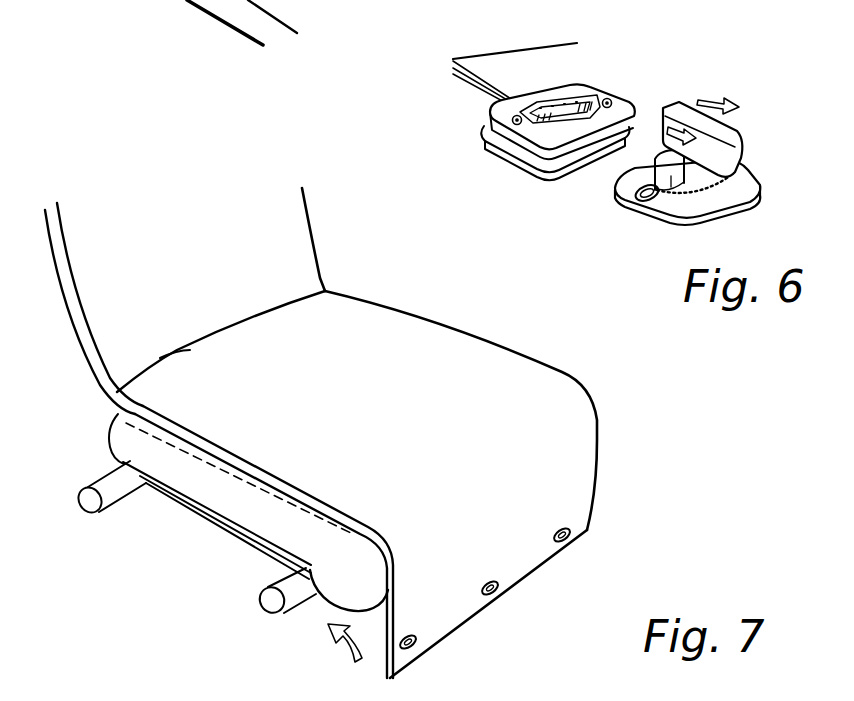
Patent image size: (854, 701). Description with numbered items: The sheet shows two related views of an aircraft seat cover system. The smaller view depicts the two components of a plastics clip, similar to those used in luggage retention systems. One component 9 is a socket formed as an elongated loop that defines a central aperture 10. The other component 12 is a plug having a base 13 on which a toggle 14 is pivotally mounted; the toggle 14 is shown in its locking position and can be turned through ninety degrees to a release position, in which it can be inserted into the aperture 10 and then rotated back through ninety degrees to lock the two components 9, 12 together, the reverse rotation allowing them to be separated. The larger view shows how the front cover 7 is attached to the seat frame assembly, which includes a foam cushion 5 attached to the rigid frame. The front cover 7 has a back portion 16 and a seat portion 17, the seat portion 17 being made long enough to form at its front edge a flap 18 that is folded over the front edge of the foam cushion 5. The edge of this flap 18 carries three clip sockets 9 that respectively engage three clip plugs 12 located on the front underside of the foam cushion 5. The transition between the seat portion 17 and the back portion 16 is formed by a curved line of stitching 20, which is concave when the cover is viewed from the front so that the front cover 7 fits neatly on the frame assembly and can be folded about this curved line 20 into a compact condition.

In FIG. 7, the foam cushion 5 is at (250, 503).
In FIG. 7, the front cover 7 is at (490, 371).
In FIG. 6, the clip socket component 9 is at (490, 173).
In FIG. 7, the clip socket component 9 is at (413, 637).
In FIG. 6, the central aperture 10 is at (543, 157).
In FIG. 6, the clip plug component 12 is at (759, 200).
In FIG. 6, the base 13 is at (670, 205).
In FIG. 6, the toggle 14 is at (678, 106).
In FIG. 7, the back portion of the front cover 16 is at (205, 267).
In FIG. 7, the seat portion of the front cover 17 is at (378, 400).
In FIG. 7, the front edge flap 18 is at (462, 598).
In FIG. 7, the curved line of stitching 20 is at (177, 350).